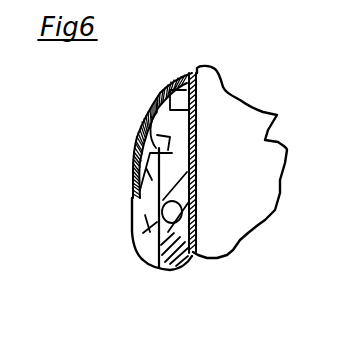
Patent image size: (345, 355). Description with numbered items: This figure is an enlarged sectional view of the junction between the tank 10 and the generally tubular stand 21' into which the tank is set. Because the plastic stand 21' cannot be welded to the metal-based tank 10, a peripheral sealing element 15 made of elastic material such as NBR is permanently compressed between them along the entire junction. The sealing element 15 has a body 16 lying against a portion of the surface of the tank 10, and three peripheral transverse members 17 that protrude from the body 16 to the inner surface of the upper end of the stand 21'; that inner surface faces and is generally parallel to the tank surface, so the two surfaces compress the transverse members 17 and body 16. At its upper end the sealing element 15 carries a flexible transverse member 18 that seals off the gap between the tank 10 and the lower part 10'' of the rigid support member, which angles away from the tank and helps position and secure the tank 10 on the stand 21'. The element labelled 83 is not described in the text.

The tank 10 is at (240, 186).
The lower part of the rigid support member 10'' is at (127, 171).
The sealing element 15 is at (160, 268).
The body 16 is at (197, 140).
The peripheral transverse members 17 is at (197, 187).
The flexible transverse member 18 is at (190, 152).
The stand 21' is at (119, 244).
The hook element 83 is at (132, 207).